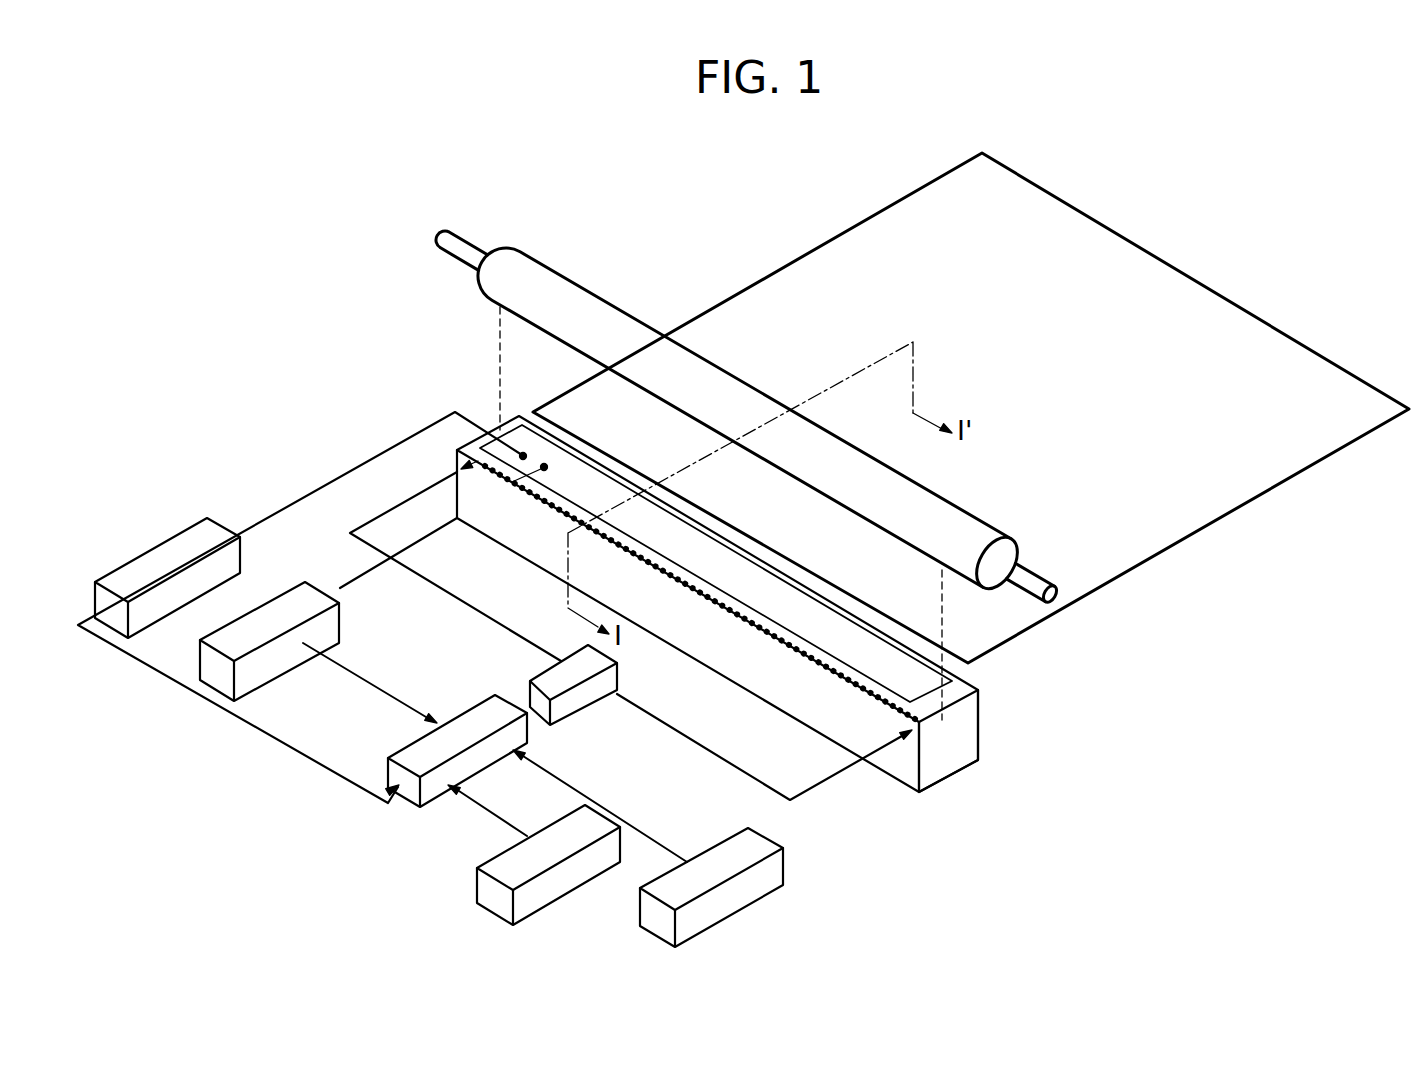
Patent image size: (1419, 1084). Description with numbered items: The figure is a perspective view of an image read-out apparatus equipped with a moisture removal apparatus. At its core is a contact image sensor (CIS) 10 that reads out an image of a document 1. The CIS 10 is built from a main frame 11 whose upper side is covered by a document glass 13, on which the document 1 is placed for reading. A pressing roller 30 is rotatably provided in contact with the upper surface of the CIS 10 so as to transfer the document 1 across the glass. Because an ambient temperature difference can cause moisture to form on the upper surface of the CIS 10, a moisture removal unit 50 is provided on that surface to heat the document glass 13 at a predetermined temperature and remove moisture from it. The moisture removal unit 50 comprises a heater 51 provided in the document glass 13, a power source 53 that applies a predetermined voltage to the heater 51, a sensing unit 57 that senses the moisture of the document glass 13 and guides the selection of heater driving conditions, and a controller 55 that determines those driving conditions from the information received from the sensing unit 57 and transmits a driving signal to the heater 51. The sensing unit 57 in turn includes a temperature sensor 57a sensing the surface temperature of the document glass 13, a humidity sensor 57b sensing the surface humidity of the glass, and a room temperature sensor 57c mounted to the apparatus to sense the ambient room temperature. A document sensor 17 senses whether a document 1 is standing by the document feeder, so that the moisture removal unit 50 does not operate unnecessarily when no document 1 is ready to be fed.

The document 1 is at (1183, 538).
The contact image sensor 10 is at (762, 619).
The main frame 11 is at (948, 758).
The document glass 13 is at (942, 752).
The document sensor 17 is at (752, 893).
The pressing roller 30 is at (585, 298).
The moisture removal unit 50 is at (254, 502).
The heater 51 is at (923, 700).
The power source 53 is at (574, 710).
The controller 55 is at (434, 793).
The sensing unit 57 is at (103, 702).
The temperature sensor 57a is at (123, 622).
The humidity sensor 57b is at (218, 683).
The room temperature sensor 57c is at (478, 897).